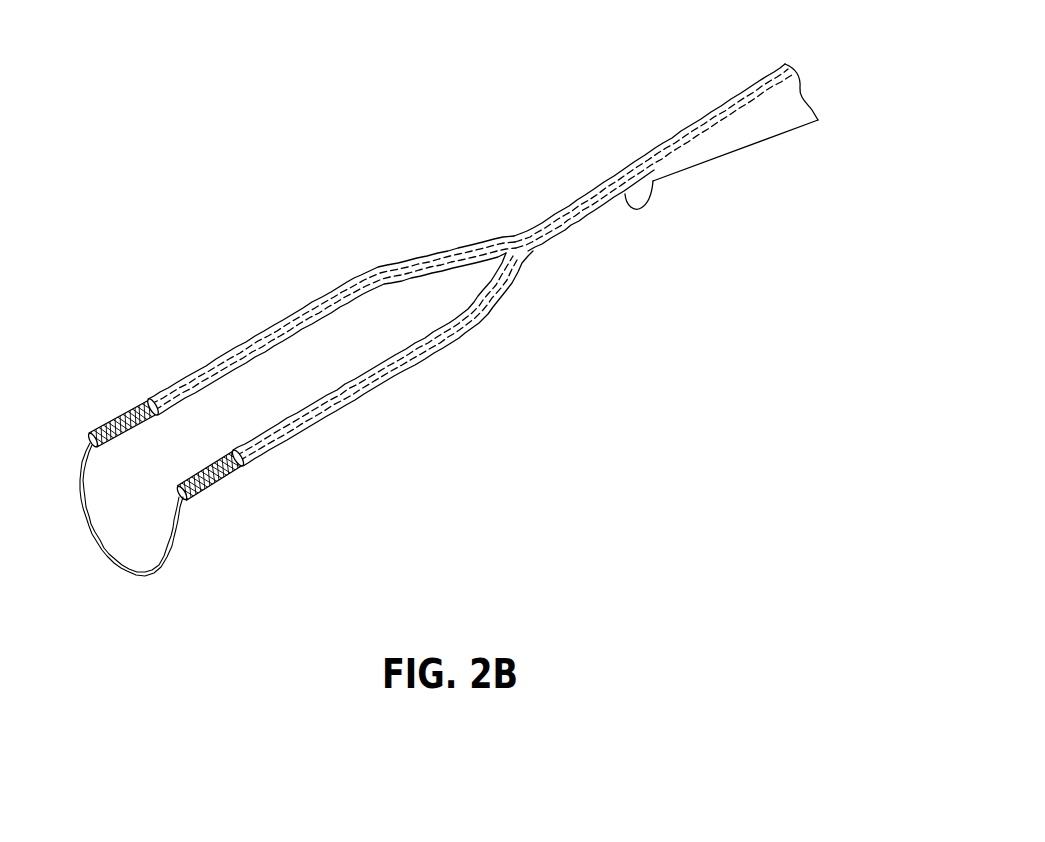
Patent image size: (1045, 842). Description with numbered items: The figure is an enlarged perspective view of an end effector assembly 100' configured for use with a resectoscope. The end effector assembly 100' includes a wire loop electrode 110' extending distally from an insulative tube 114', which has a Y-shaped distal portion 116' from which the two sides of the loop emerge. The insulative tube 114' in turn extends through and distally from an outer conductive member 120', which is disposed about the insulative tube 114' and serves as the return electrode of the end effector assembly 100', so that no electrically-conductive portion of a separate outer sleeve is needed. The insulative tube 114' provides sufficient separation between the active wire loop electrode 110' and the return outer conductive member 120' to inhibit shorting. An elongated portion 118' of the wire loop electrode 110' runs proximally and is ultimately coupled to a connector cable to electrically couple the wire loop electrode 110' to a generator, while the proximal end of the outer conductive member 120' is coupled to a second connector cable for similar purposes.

The end effector assembly 100' is at (428, 330).
The wire loop electrode 110' is at (110, 519).
The insulative tube 114' is at (188, 451).
The Y-shaped distal portion 116' is at (352, 351).
The elongated portion 118' is at (705, 136).
The outer conductive member 120' is at (383, 358).